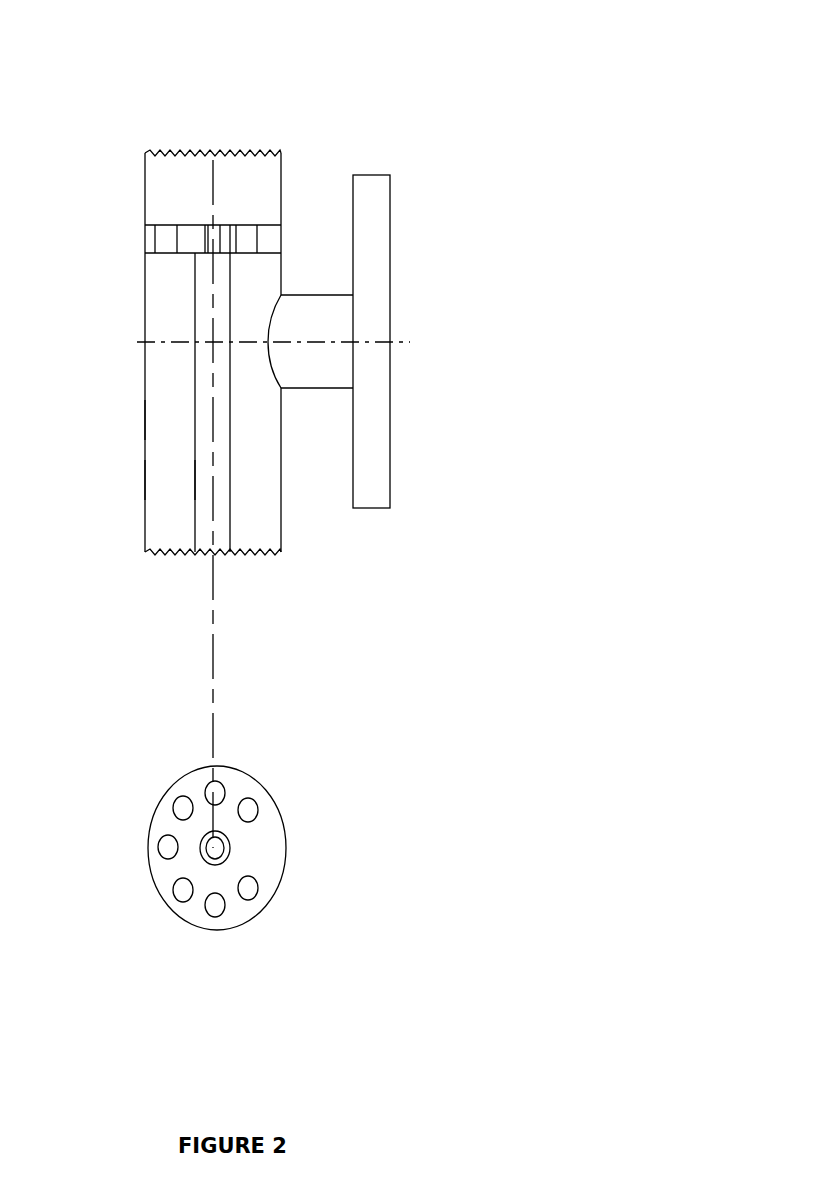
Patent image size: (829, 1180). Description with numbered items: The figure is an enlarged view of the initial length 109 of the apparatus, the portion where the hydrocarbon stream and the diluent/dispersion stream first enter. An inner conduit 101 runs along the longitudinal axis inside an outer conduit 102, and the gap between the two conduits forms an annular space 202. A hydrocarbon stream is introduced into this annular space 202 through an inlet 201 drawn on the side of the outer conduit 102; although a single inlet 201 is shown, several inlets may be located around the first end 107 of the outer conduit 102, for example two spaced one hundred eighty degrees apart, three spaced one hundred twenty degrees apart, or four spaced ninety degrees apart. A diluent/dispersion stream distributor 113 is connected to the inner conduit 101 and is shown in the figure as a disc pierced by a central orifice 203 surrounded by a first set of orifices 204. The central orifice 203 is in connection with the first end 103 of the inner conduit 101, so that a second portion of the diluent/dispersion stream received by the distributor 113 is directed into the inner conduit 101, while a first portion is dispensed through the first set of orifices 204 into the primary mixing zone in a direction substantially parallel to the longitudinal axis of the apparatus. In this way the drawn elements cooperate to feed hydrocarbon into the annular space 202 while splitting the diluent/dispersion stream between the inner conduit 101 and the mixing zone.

The initial length 109 is at (269, 62).
The first end 107 is at (276, 155).
The diluent/dispersion stream distributor 113 is at (185, 225).
The first end 103 is at (208, 253).
The inner conduit 101 is at (190, 372).
The outer conduit 102 is at (145, 417).
The annular space 202 is at (160, 474).
The inlet 201 is at (384, 224).
The central orifice 203 is at (217, 848).
The first set of orifices 204 is at (186, 802).